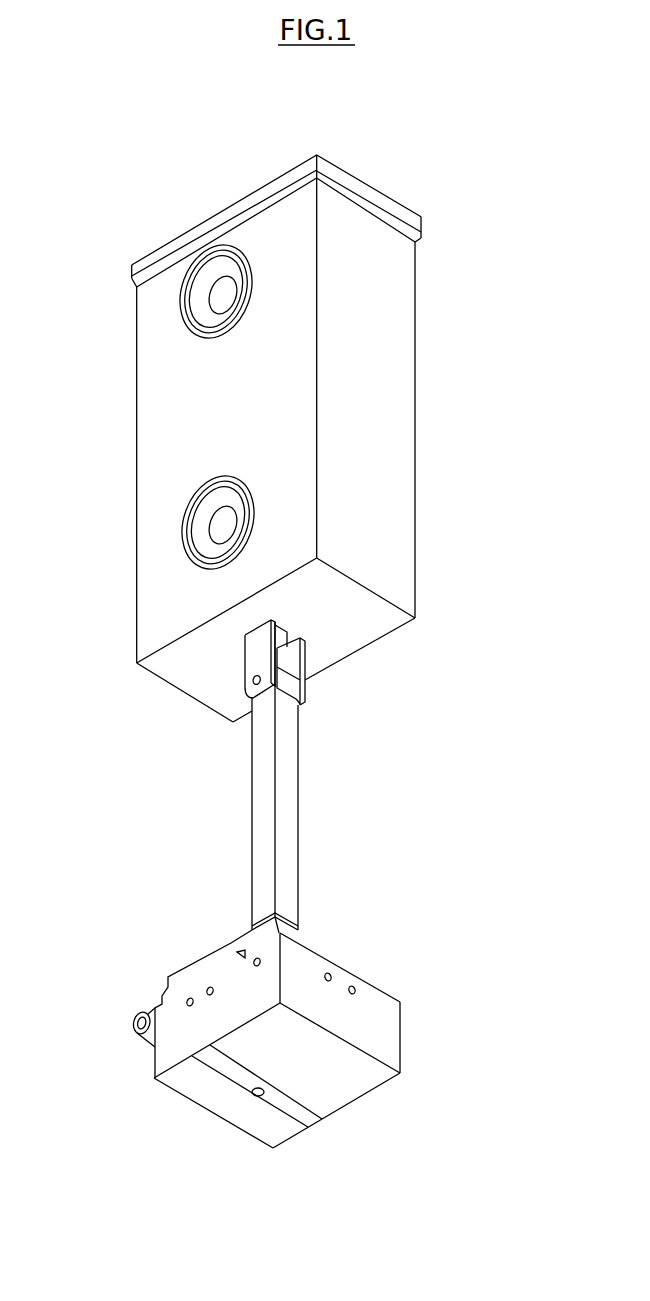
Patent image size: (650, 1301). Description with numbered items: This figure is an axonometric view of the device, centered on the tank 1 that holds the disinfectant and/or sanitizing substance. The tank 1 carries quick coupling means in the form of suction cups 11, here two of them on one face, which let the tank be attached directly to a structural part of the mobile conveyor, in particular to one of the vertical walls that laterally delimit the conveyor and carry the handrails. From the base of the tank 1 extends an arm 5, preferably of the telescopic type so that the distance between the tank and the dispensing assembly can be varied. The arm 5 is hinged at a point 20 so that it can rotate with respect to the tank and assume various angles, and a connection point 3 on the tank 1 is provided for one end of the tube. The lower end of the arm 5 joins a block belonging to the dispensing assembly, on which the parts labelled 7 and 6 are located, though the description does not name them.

The tank 1 is at (402, 402).
The quick coupling means (suction cups) 11 is at (217, 300).
The hinge point 20 is at (252, 677).
The connection point 3 is at (278, 642).
The arm 5 is at (292, 814).
The base notch 7 is at (247, 953).
The bushing ring 6 is at (132, 1010).